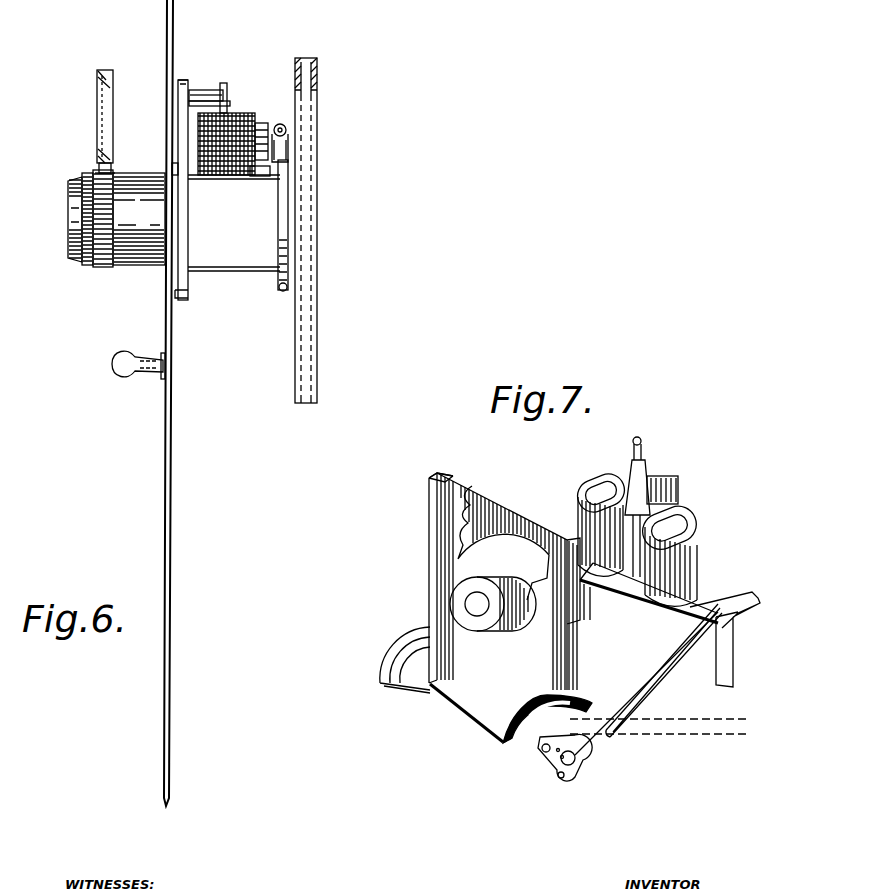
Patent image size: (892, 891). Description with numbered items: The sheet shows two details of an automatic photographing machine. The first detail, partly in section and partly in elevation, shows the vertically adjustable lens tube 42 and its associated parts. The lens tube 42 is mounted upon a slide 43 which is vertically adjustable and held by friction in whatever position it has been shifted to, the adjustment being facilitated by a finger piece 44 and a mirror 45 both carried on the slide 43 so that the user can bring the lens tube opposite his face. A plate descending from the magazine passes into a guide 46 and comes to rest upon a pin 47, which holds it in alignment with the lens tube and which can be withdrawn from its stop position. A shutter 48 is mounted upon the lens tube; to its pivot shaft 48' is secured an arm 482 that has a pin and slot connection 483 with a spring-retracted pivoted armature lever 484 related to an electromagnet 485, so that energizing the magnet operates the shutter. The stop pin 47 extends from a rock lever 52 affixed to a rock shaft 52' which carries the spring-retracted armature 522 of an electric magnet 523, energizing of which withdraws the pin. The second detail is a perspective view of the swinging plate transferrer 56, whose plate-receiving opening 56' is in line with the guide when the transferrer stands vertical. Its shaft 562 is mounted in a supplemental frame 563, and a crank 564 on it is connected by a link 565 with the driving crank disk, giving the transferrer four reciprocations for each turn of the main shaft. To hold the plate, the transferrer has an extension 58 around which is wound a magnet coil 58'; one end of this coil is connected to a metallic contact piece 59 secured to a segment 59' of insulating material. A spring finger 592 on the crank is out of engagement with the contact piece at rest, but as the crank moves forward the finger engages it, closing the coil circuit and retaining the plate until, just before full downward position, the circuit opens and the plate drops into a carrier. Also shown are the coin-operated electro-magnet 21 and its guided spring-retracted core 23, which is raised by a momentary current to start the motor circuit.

In FIG. 6, the lens tube 42 is at (218, 260).
In FIG. 6, the slide 43 is at (174, 500).
In FIG. 6, the finger piece 44 is at (118, 380).
In FIG. 6, the mirror 45 is at (110, 113).
In FIG. 6, the guide 46 is at (306, 117).
In FIG. 6, the pin 47 is at (313, 272).
In FIG. 6, the shutter 48 is at (226, 190).
In FIG. 6, the pivot shaft 48' is at (204, 61).
In FIG. 6, the arm 482 is at (225, 84).
In FIG. 6, the pin and slot connection 483 is at (227, 92).
In FIG. 6, the armature lever 484 is at (231, 103).
In FIG. 6, the electromagnet 485 is at (268, 166).
In FIG. 6, the rock lever 52 is at (324, 225).
In FIG. 6, the rock shaft 52' is at (329, 95).
In FIG. 6, the armature 522 is at (319, 141).
In FIG. 6, the electric magnet 523 is at (258, 180).
In FIG. 7, the electro-magnet 21 is at (578, 502).
In FIG. 7, the core 23 is at (647, 455).
In FIG. 7, the plate transferrer 56 is at (573, 607).
In FIG. 7, the plate-receiving opening 56' is at (448, 448).
In FIG. 7, the shaft 562 is at (576, 762).
In FIG. 7, the supplemental frame 563 is at (659, 714).
In FIG. 7, the crank 564 is at (560, 779).
In FIG. 7, the link 565 is at (734, 732).
In FIG. 7, the extension 58 is at (410, 676).
In FIG. 7, the magnet coil 58' is at (439, 611).
In FIG. 7, the contact piece 59 is at (565, 702).
In FIG. 7, the segment 59' is at (472, 752).
In FIG. 7, the spring finger 592 is at (543, 766).